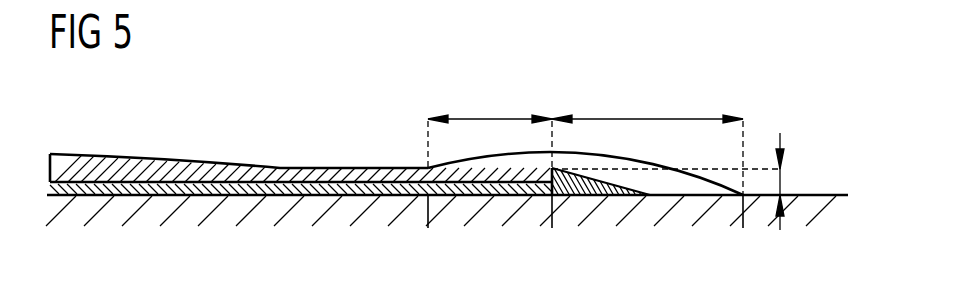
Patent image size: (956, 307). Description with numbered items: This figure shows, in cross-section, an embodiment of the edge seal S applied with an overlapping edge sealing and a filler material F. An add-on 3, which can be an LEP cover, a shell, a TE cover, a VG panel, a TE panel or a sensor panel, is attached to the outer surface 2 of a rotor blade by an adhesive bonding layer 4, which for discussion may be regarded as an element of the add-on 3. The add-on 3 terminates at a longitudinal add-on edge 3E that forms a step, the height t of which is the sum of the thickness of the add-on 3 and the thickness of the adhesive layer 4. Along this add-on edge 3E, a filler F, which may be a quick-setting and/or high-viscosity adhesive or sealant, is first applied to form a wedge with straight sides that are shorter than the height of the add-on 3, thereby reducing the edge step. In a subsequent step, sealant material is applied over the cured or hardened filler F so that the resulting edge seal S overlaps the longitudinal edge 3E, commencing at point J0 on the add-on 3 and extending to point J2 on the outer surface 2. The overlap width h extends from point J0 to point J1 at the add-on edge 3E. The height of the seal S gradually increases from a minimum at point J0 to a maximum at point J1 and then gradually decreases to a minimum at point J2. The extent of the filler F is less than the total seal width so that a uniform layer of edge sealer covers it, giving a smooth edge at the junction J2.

The outer surface 2 is at (825, 194).
The add-on 3 is at (256, 176).
The add-on edge 3E is at (548, 200).
The adhesive bonding layer 4 is at (117, 187).
The filler material F is at (584, 192).
The edge seal S is at (680, 188).
The first point J0 is at (427, 197).
The point at the add-on edge J1 is at (552, 197).
The second point J2 is at (746, 197).
The overlap width h is at (488, 115).
The height t is at (781, 183).